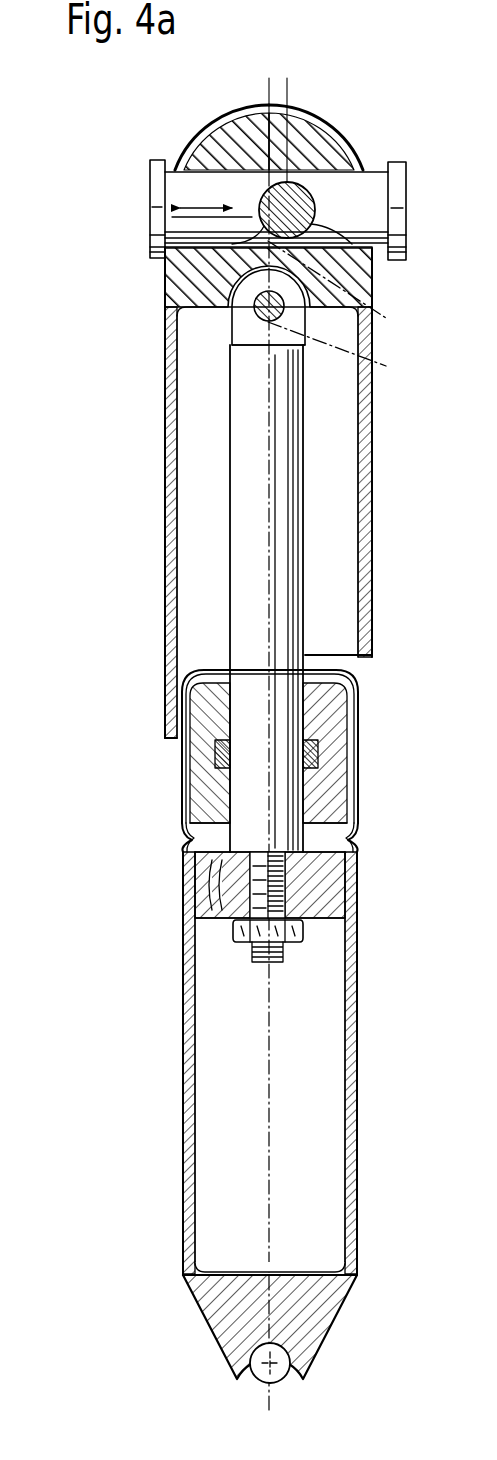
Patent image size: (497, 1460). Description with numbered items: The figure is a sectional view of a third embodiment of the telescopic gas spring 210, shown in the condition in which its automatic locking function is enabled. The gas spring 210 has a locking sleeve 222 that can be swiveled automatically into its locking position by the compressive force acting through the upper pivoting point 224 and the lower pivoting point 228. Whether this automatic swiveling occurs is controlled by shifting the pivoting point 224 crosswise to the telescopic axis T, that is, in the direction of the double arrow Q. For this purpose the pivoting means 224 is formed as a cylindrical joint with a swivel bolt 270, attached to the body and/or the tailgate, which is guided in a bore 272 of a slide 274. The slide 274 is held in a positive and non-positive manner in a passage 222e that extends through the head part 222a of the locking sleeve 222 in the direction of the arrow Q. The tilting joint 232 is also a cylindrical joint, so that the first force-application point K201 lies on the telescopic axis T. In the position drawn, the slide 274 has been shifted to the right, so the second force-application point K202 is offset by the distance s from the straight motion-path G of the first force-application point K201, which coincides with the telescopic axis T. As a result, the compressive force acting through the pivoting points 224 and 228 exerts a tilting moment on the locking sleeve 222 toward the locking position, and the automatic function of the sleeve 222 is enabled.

The gas spring 210 is at (156, 438).
The locking sleeve 222 is at (372, 548).
The head part 222a is at (315, 140).
The passage 222e is at (232, 157).
The pivoting point 224 is at (308, 189).
The pivoting point 228 is at (318, 1362).
The tilting joint 232 is at (255, 313).
The swivel bolt 270 is at (372, 272).
The bore 272 is at (306, 174).
The slide 274 is at (372, 200).
The straight motion-path G is at (258, 575).
The telescopic axis T is at (268, 737).
The double arrow Q is at (200, 206).
The distance s is at (318, 81).
The first force-application point K201 is at (348, 359).
The second force-application point K202 is at (348, 295).